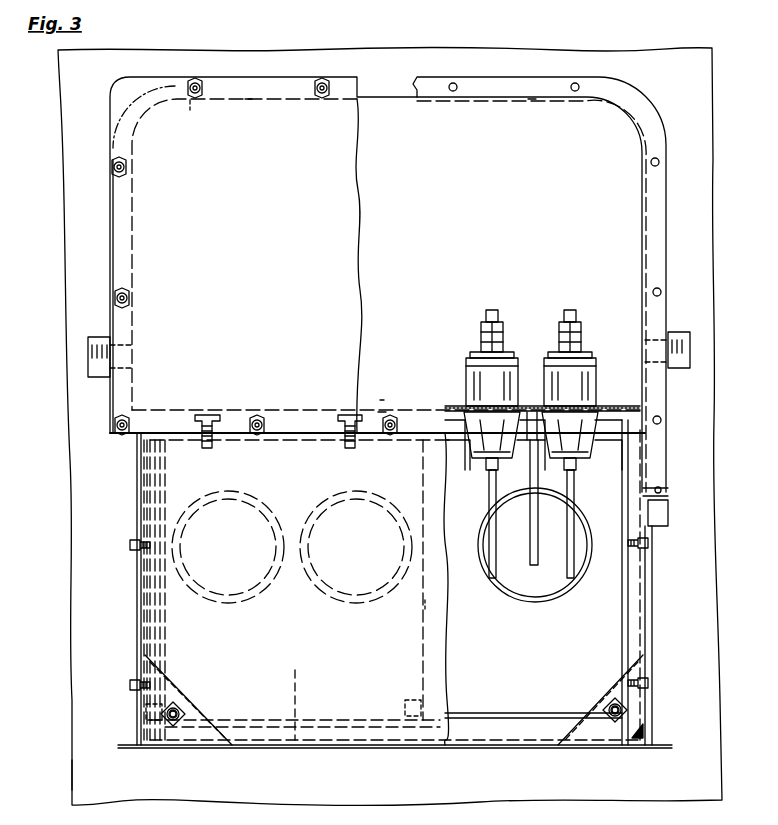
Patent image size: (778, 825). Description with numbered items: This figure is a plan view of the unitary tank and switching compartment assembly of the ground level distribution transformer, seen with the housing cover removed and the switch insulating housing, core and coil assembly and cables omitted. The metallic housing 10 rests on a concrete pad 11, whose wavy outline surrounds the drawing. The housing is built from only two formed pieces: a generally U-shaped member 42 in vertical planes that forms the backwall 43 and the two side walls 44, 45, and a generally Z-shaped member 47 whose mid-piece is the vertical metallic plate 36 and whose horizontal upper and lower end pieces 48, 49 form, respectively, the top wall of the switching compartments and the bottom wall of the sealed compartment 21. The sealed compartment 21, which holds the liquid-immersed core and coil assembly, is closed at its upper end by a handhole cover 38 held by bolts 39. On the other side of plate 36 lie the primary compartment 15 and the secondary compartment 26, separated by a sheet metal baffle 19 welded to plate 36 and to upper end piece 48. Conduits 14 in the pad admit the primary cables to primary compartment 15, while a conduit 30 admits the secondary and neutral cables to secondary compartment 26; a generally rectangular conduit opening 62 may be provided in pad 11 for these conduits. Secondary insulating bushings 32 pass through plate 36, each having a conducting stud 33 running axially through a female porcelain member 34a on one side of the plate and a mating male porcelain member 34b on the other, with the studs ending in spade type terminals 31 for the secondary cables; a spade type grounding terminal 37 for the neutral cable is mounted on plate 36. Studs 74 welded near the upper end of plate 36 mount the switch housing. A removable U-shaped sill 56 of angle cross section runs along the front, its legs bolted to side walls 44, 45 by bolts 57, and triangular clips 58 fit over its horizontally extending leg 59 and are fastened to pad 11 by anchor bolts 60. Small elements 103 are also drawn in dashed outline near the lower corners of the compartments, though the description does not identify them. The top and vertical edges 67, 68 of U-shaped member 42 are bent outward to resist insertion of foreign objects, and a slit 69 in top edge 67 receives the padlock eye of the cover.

The metallic housing 10 is at (390, 426).
The concrete pad 11 is at (72, 774).
The conduit 14 is at (322, 598).
The primary compartment 15 is at (295, 742).
The baffle 19 is at (422, 603).
The sealed compartment 21 is at (395, 319).
The secondary compartment 26 is at (533, 528).
The conduit 30 is at (552, 592).
The spade type terminals 31 is at (490, 556).
The secondary insulating bushings 32 is at (488, 480).
The conducting studs 33 is at (492, 310).
The female porcelain member 34a is at (480, 440).
The male porcelain member 34b is at (480, 378).
The vertical metallic plate 36 is at (190, 410).
The spade type grounding terminal 37 is at (530, 575).
The handhole cover 38 is at (294, 266).
The bolts 39 is at (322, 78).
The U-shaped member 42 is at (620, 77).
The backwall 43 is at (248, 97).
The side wall 44 is at (131, 222).
The side wall 45 is at (648, 242).
The Z-shaped member 47 is at (382, 410).
The upper end piece 48 is at (178, 497).
The lower end piece 49 is at (190, 180).
The U-shaped sill 56 is at (138, 582).
The bolts 57 is at (130, 545).
The triangular clips 58 is at (186, 706).
The horizontally extending leg 59 is at (148, 634).
The anchor bolts 60 is at (185, 722).
The conduit opening 62 is at (312, 408).
The top edge 67 is at (428, 86).
The vertical edge 68 is at (132, 750).
The slit 69 is at (658, 492).
The studs 74 is at (212, 450).
The spacers 103 is at (145, 714).